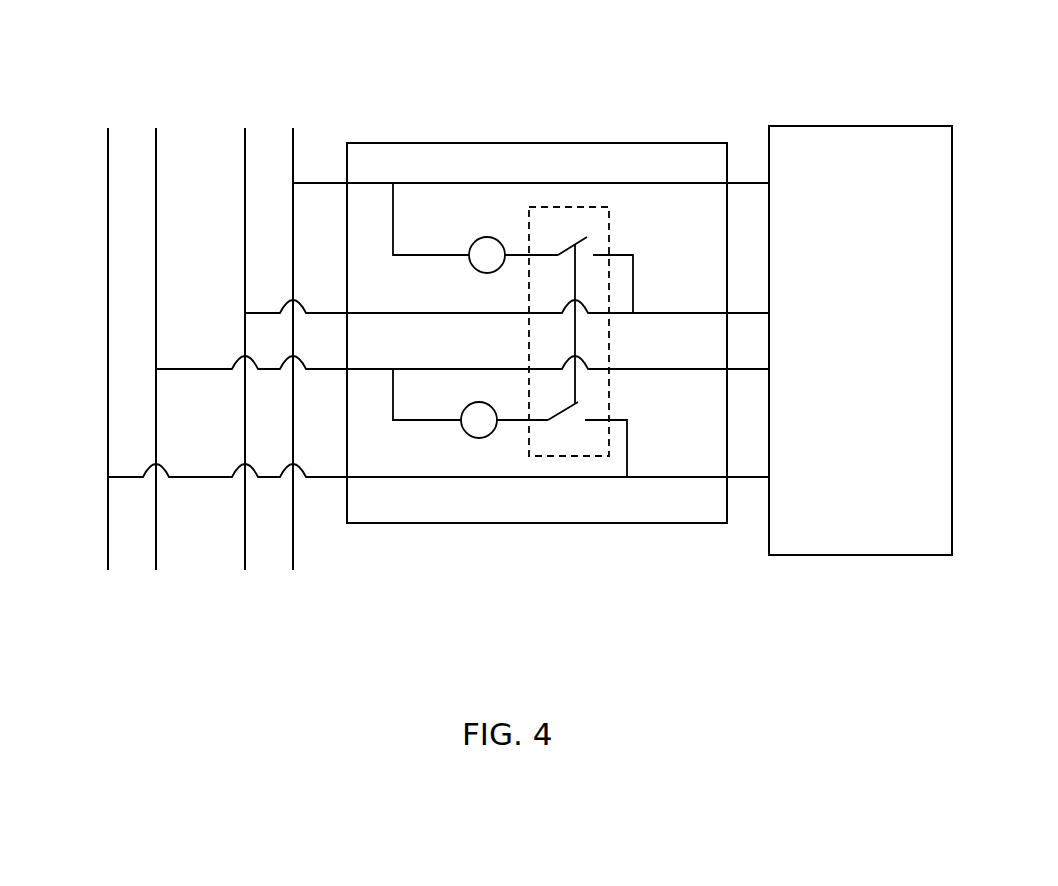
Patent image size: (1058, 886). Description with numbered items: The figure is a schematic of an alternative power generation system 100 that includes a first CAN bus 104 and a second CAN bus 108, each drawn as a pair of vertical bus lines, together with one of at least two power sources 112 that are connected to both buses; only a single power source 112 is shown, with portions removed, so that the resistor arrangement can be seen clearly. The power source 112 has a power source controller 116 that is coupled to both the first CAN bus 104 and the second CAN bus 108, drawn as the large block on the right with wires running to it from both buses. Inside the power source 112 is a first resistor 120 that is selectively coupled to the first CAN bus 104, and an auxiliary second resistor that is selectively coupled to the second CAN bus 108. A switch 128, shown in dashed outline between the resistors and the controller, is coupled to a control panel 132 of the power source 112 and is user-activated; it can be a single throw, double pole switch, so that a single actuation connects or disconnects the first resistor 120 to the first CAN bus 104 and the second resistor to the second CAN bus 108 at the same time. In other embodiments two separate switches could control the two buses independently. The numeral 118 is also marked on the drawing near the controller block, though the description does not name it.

The power generation system 100 is at (797, 86).
The first CAN bus 104 is at (108, 159).
The second CAN bus 108 is at (245, 159).
The power source 112 is at (876, 86).
The power source controller 116 is at (481, 440).
The controller output 118 is at (862, 557).
The first resistor 120 is at (487, 236).
The switch 128 is at (572, 203).
The control panel 132 is at (379, 142).